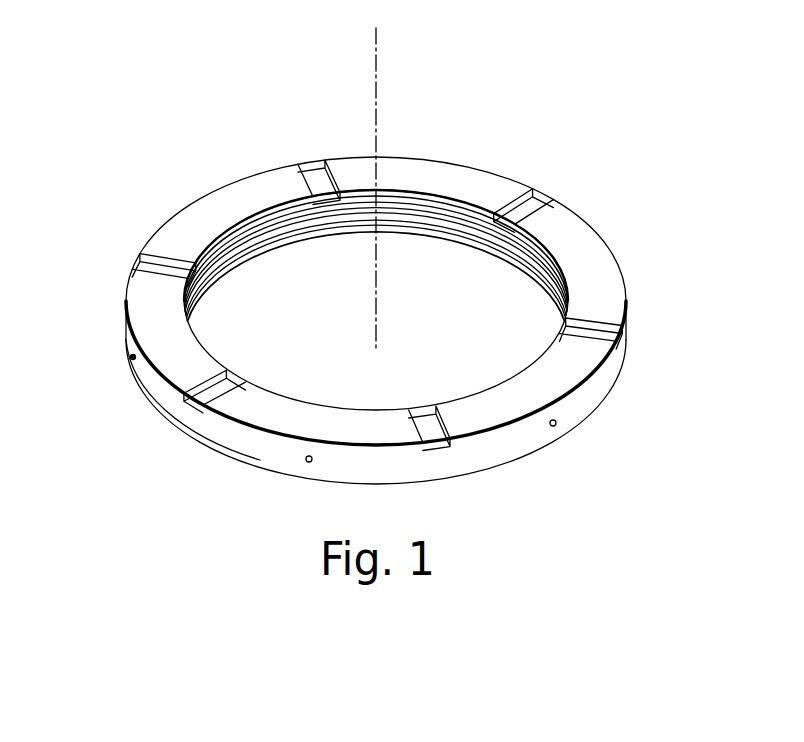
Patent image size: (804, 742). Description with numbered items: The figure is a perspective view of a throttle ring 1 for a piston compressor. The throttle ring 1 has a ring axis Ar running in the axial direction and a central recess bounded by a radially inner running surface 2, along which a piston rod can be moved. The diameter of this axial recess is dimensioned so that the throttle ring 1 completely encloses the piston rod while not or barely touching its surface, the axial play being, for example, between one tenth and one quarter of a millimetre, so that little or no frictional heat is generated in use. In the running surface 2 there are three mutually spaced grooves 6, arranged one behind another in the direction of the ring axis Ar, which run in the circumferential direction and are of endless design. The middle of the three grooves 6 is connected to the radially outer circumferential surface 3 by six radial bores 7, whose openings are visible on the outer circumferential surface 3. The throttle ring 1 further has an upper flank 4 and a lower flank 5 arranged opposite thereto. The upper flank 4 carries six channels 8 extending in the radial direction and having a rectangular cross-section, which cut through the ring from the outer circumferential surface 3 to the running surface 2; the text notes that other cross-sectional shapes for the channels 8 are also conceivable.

The throttle ring 1 is at (211, 120).
The radially inner running surface 2 is at (472, 220).
The radially outer circumferential surface 3 is at (597, 387).
The upper flank 4 is at (147, 297).
The lower flank 5 is at (147, 398).
The grooves 6 is at (203, 246).
The radial bores 7 is at (238, 243).
The channels 8 is at (600, 337).
The ring axis Ar is at (376, 55).